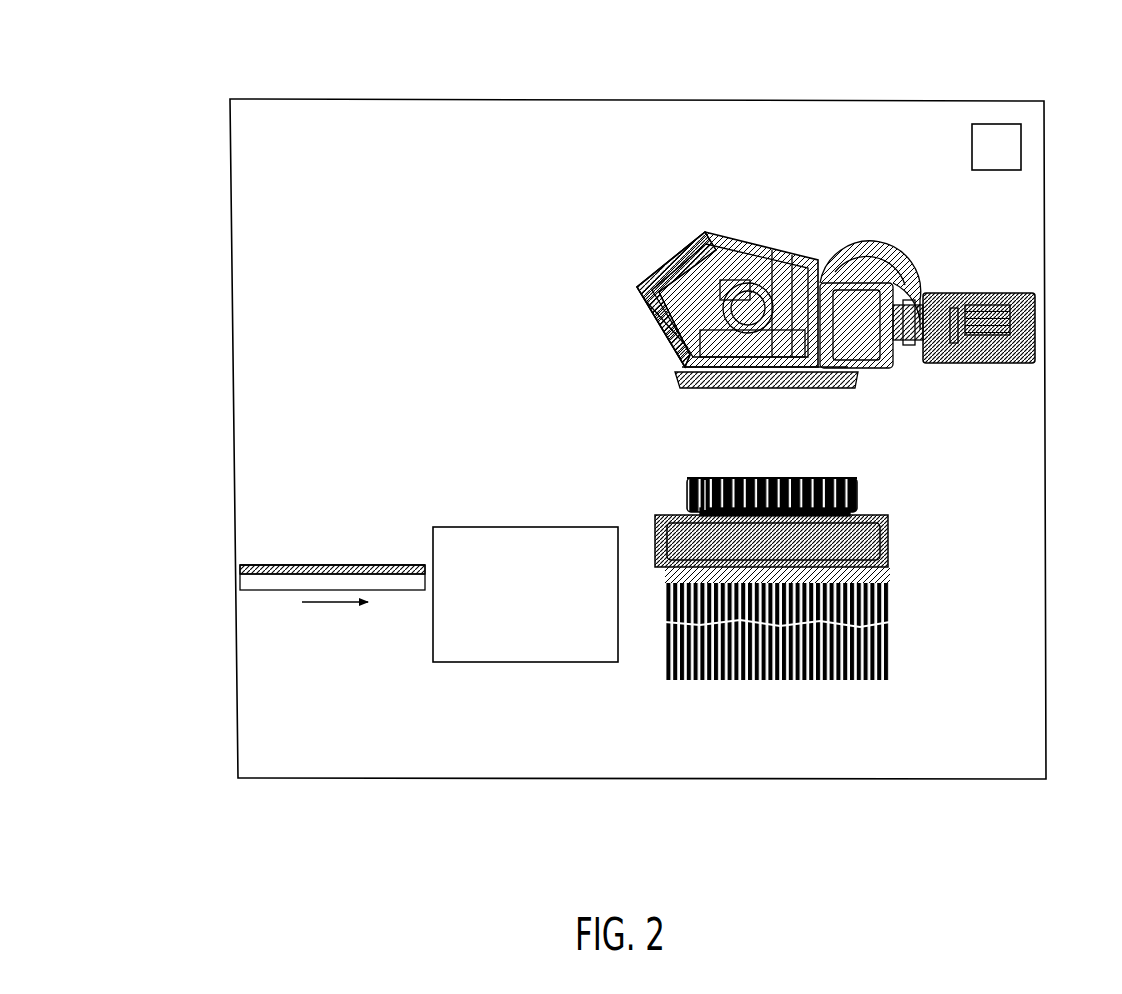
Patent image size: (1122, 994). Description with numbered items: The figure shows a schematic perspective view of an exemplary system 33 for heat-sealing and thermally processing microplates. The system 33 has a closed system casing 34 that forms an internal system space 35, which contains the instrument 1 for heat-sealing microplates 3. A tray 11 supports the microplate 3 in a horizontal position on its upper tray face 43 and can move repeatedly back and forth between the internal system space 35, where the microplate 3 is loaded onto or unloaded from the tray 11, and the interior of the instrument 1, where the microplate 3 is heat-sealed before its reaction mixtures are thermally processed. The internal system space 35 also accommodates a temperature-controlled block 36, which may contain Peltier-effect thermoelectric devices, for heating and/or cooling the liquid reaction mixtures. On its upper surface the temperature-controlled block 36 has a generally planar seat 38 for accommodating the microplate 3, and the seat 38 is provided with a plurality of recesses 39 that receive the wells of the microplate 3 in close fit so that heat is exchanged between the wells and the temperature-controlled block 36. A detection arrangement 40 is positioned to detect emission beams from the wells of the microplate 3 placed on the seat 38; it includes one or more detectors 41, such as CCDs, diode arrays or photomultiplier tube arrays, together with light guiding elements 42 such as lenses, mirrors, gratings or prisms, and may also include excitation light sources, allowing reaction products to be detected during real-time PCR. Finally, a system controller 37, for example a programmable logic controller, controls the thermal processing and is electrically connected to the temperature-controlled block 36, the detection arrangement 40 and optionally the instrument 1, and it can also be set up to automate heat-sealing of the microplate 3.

The instrument 1 is at (535, 606).
The microplate 3 is at (280, 564).
The tray 11 is at (255, 582).
The system 33 is at (147, 93).
The closed system casing 34 is at (352, 98).
The internal system space 35 is at (318, 226).
The temperature-controlled block 36 is at (884, 550).
The system controller 37 is at (996, 122).
The seat 38 is at (696, 478).
The recesses 39 is at (823, 478).
The detection arrangement 40 is at (770, 228).
The detectors 41 is at (985, 292).
The light guiding elements 42 is at (670, 300).
The upper tray face 43 is at (341, 572).